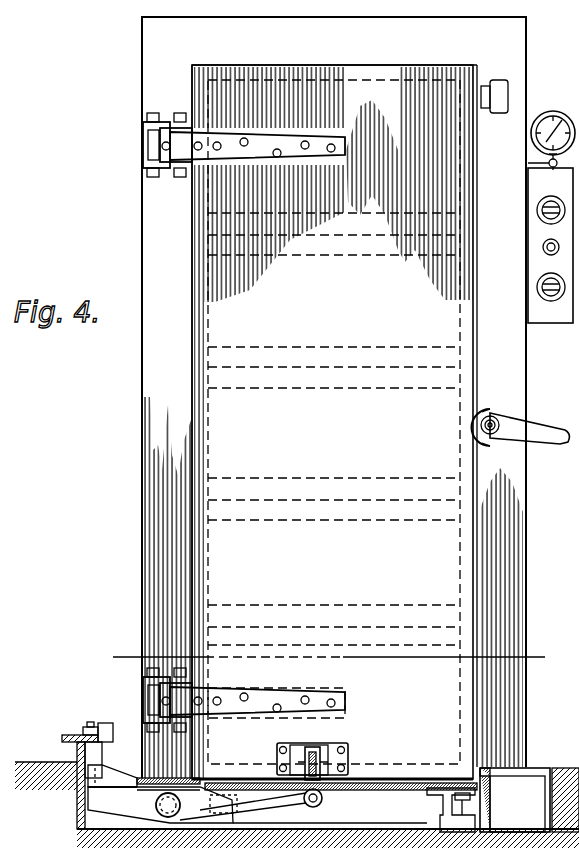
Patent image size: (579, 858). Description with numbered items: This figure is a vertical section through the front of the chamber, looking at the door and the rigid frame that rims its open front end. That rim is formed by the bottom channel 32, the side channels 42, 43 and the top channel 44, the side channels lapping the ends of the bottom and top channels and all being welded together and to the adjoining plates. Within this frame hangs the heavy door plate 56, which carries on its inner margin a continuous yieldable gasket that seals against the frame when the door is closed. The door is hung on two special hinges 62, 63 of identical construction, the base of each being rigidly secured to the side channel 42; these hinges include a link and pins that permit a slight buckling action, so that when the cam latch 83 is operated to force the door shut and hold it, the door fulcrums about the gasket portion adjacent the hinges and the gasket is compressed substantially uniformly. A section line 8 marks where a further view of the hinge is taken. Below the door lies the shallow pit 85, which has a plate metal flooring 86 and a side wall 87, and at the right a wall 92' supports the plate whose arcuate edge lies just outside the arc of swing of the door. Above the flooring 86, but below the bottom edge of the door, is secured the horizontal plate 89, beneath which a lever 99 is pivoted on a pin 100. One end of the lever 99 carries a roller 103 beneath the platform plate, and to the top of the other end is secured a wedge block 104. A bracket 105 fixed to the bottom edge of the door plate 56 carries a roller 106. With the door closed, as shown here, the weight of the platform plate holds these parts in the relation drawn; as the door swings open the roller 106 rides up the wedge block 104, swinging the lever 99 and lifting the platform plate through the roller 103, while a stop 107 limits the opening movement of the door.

The top channel 44 is at (416, 47).
The side channel 42 is at (143, 483).
The side channel 43 is at (516, 520).
The door plate 56 is at (332, 422).
The section line 8- 8 is at (330, 658).
The hinge 62 is at (142, 151).
The hinge 63 is at (142, 683).
The cam latch 83 is at (512, 433).
The shallow pit 85 is at (348, 820).
The side wall 87 is at (63, 751).
The stop 107 is at (116, 713).
The wedge block 104 is at (112, 776).
The horizontal plate 89 is at (148, 786).
The pin 100 is at (176, 796).
The lever 99 is at (280, 802).
The roller 103 is at (323, 799).
The bracket 105 is at (350, 760).
The roller 106 is at (312, 752).
The plate metal flooring 86 is at (393, 832).
The bottom channel 32 is at (350, 812).
The wall 92' is at (529, 800).